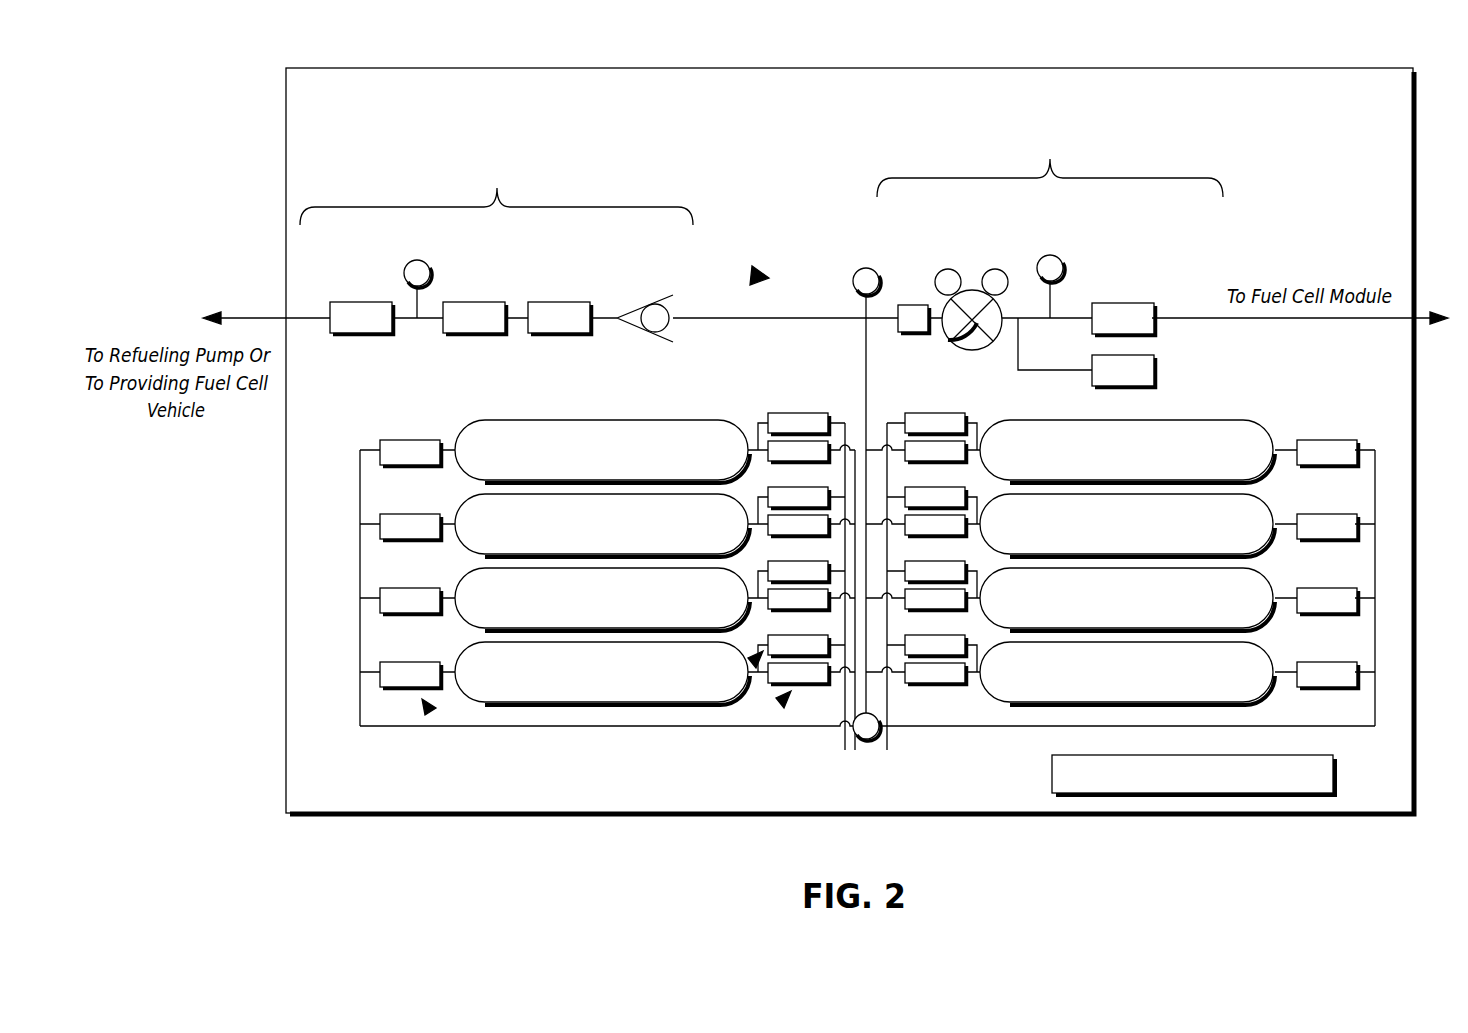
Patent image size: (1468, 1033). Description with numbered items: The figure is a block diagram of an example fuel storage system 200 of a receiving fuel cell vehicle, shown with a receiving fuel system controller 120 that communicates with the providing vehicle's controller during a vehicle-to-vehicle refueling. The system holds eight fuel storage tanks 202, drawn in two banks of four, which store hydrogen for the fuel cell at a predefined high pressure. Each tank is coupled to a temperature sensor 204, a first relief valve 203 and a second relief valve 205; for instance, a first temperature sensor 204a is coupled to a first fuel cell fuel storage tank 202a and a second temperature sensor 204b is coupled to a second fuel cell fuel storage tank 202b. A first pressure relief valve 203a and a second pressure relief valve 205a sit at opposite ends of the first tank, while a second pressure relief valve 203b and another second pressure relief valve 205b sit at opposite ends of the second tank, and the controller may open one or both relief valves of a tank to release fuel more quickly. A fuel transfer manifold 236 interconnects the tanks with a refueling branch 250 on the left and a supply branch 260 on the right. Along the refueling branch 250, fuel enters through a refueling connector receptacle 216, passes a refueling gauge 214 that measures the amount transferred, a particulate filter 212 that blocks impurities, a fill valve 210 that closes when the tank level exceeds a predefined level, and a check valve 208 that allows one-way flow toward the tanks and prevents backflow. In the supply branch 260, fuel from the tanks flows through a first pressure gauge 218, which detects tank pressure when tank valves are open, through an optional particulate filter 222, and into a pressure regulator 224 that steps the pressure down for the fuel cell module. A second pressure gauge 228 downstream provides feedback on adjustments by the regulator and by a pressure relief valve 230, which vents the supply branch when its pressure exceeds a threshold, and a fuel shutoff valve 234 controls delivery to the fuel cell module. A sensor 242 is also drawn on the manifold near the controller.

The fuel storage system 200 is at (886, 68).
The refueling branch 250 is at (390, 207).
The supply branch 260 is at (990, 178).
The refueling connector receptacle 216 is at (350, 302).
The refueling gauge 214 is at (420, 260).
The particulate filter 212 is at (492, 302).
The fill valve 210 is at (577, 302).
The check valve 208 is at (655, 303).
The fuel transfer manifold 236 is at (762, 270).
The first pressure gauge 218 is at (876, 268).
The particulate filter 222 is at (917, 335).
The pressure regulator 224 is at (978, 285).
The second pressure gauge 228 is at (1052, 255).
The fuel shutoff valve 234 is at (1122, 302).
The pressure relief valve 230 is at (1155, 368).
The fuel storage tanks 202 is at (870, 536).
The first fuel cell fuel storage tank 202a is at (616, 695).
The second fuel cell fuel storage tank 202b is at (1142, 695).
The first relief valves 203 is at (750, 665).
The first pressure relief valve 203a is at (793, 412).
The second pressure relief valve 203b is at (925, 412).
The temperature sensors 204 is at (775, 710).
The first temperature sensor 204a is at (800, 452).
The second temperature sensor 204b is at (950, 452).
The second relief valves 205 is at (430, 720).
The second pressure relief valve 205a is at (410, 438).
The second pressure relief valve 205b is at (1325, 438).
The sensor 242 is at (878, 740).
The receiving fuel system controller 120 is at (1336, 778).